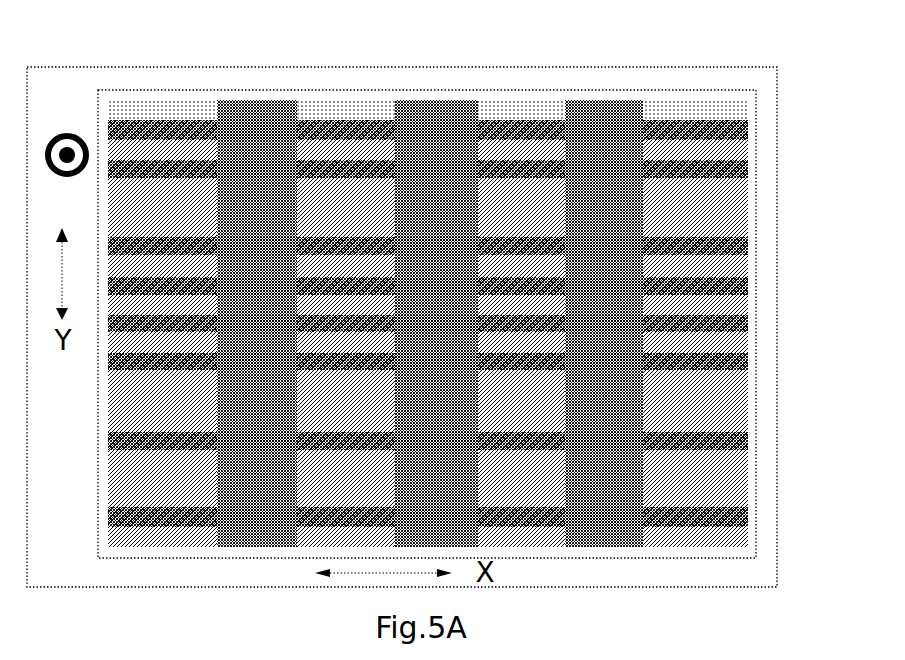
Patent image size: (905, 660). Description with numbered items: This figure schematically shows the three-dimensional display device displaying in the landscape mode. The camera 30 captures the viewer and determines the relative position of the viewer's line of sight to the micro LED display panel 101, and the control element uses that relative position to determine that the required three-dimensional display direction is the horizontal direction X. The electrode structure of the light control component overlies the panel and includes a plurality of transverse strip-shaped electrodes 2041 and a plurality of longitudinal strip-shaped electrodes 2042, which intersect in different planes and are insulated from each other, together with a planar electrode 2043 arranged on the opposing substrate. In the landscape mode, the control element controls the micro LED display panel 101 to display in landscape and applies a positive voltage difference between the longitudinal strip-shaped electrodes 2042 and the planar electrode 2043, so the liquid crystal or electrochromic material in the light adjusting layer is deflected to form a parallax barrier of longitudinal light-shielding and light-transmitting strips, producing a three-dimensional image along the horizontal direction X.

The camera 30 is at (70, 133).
The micro LED display panel 101 is at (221, 67).
The transverse strip-shaped electrodes 2041 is at (347, 107).
The longitudinal strip-shaped electrodes 2042 is at (500, 112).
The planar electrode 2043 is at (697, 97).